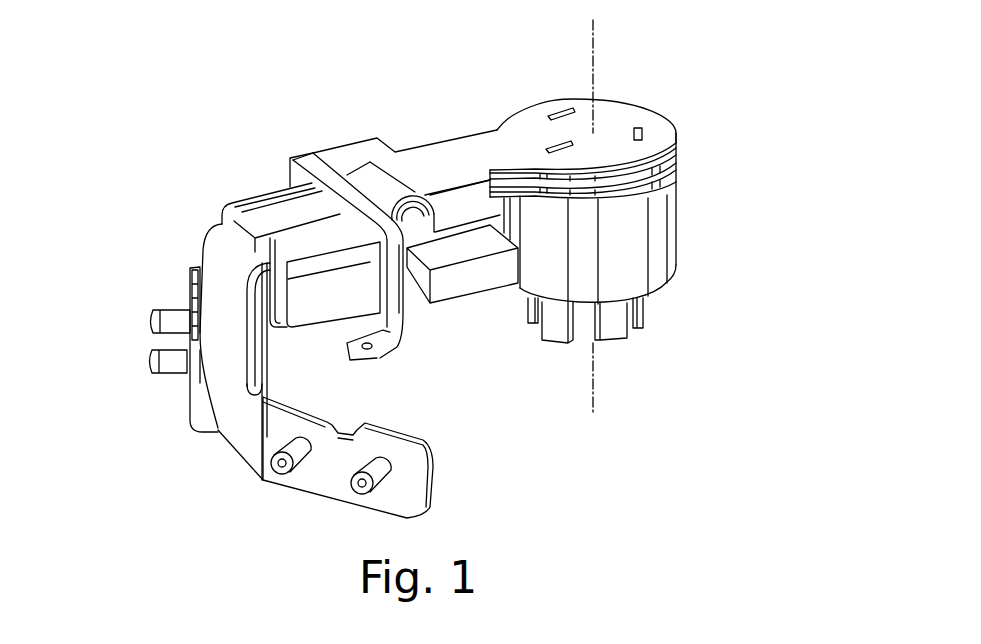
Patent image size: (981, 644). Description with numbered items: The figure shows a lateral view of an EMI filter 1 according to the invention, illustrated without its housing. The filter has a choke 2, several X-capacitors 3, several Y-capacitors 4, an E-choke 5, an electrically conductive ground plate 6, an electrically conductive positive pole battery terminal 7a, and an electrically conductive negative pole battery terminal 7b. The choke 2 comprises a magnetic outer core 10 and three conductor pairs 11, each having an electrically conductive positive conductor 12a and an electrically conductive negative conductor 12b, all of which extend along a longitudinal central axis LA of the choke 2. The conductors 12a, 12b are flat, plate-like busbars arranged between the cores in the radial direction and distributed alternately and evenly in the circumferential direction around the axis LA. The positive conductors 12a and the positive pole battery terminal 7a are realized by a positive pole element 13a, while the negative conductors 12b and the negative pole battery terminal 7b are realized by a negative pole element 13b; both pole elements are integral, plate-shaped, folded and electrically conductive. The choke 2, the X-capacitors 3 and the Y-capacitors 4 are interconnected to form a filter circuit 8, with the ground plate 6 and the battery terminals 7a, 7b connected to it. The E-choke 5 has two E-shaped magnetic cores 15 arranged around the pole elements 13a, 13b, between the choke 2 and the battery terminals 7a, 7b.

The EMI filter 1 is at (722, 116).
The choke 2 is at (642, 201).
The X-capacitors 3 is at (417, 223).
The Y-capacitors 4 is at (487, 282).
The E-choke 5 is at (258, 260).
The ground plate 6 is at (302, 163).
The positive pole battery terminal 7a is at (183, 363).
The negative pole battery terminal 7b is at (318, 480).
The filter circuit 8 is at (395, 129).
The outer core 10 is at (647, 240).
The conductor pairs 11 is at (625, 364).
The positive conductor 12a is at (533, 323).
The negative conductor 12b is at (643, 313).
The positive pole element 13a is at (182, 411).
The negative pole element 13b is at (239, 448).
The E-shaped magnetic cores 15 is at (233, 217).
The longitudinal central axis LA is at (595, 40).